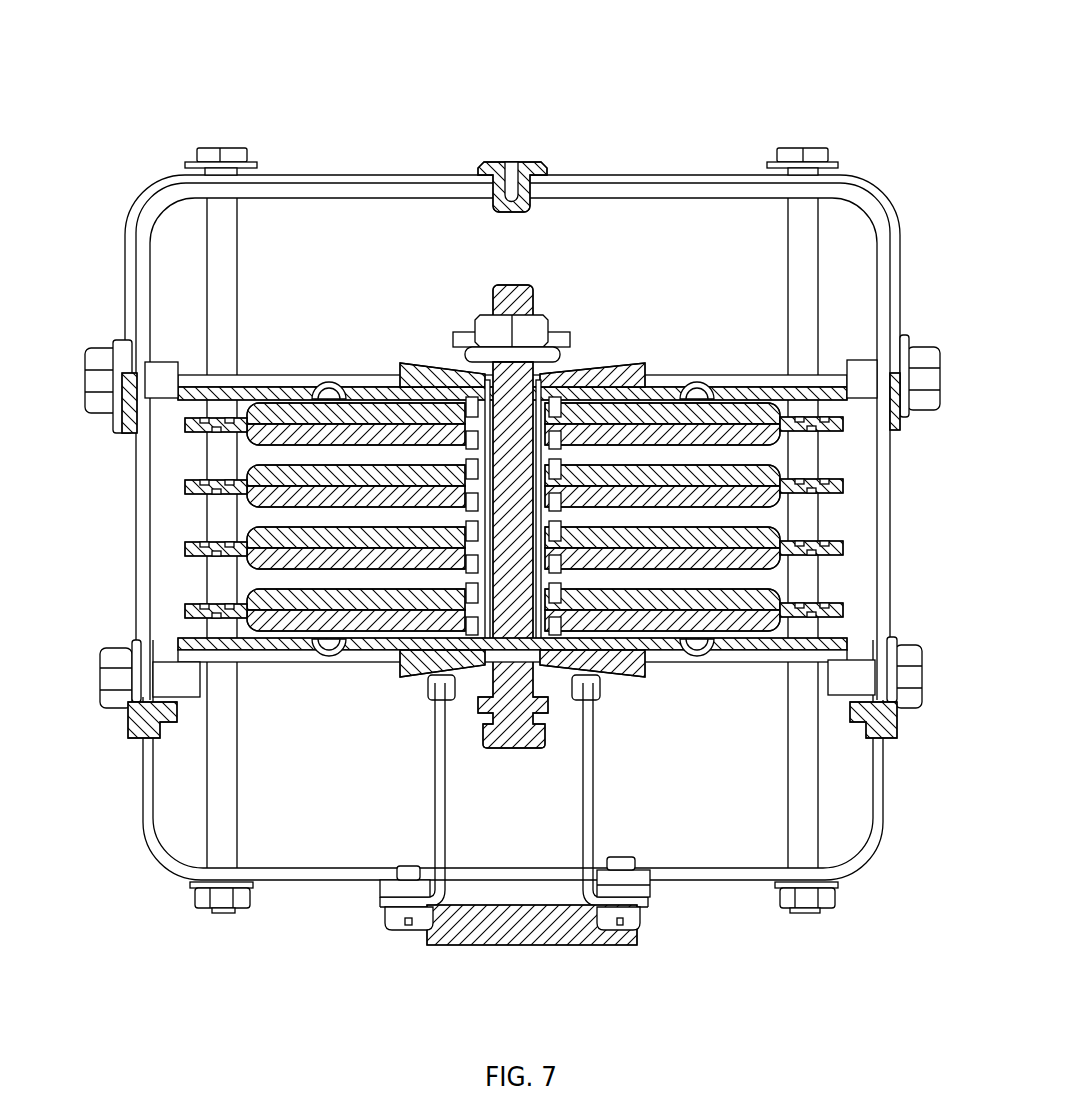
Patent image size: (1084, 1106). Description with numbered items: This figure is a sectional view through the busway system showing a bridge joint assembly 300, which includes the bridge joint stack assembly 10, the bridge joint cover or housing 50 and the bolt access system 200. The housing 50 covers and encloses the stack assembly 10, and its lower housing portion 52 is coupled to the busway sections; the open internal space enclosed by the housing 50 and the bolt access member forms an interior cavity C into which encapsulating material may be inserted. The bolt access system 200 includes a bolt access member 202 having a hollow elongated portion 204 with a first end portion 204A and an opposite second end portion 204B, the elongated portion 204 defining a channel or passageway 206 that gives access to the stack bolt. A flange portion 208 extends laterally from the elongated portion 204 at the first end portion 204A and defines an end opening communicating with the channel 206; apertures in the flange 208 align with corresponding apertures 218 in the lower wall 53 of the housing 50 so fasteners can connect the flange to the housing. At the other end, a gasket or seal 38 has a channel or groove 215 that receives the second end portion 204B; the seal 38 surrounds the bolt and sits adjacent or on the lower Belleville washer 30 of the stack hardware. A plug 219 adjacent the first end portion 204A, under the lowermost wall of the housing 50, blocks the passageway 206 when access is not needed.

The bridge joint assembly 300 is at (755, 85).
The interior cavity C is at (640, 268).
The bridge joint stack assembly 10 is at (283, 362).
The bridge joint cover or housing 50 is at (110, 575).
The lower housing portion 52 is at (130, 781).
The apertures 218 is at (200, 878).
The lower wall 53 is at (297, 885).
The plug 219 is at (419, 932).
The channel or passageway 206 is at (483, 872).
The flange portion 208 is at (623, 922).
The bolt access member 202 is at (672, 901).
The elongated portion 204 is at (644, 821).
The first end portion 204A is at (418, 842).
The second end portion 204B is at (600, 697).
The bolt access system 200 is at (630, 776).
The channel or groove 215 is at (428, 686).
The lower Belleville washer 30 is at (644, 676).
The gasket or seal 38 is at (615, 688).